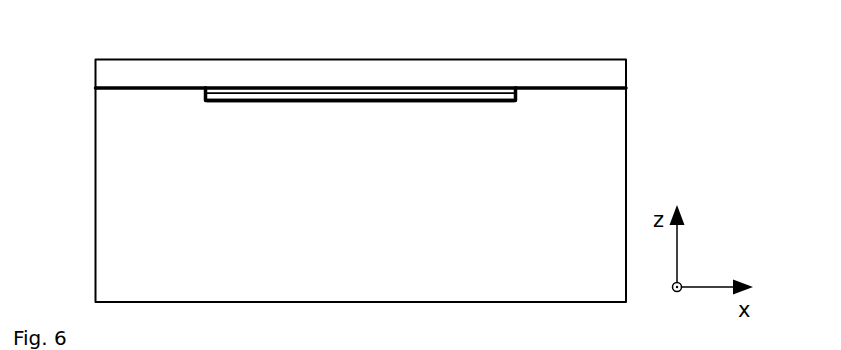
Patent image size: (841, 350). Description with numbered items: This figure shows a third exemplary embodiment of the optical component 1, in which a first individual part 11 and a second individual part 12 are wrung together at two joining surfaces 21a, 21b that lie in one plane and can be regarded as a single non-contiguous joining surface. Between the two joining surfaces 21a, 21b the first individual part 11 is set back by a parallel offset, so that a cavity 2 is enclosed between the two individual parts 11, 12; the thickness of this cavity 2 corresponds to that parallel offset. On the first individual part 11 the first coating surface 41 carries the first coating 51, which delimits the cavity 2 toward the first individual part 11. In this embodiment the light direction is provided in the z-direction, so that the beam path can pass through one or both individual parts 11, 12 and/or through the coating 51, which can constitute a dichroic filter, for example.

The optical component 1 is at (374, 162).
The cavity 2 is at (341, 90).
The first individual part 11 is at (627, 148).
The second individual part 12 is at (627, 73).
The joining surface 21a is at (123, 100).
The joining surface 21b is at (605, 102).
The first coating surface 41 is at (244, 82).
The first coating 51 is at (222, 100).